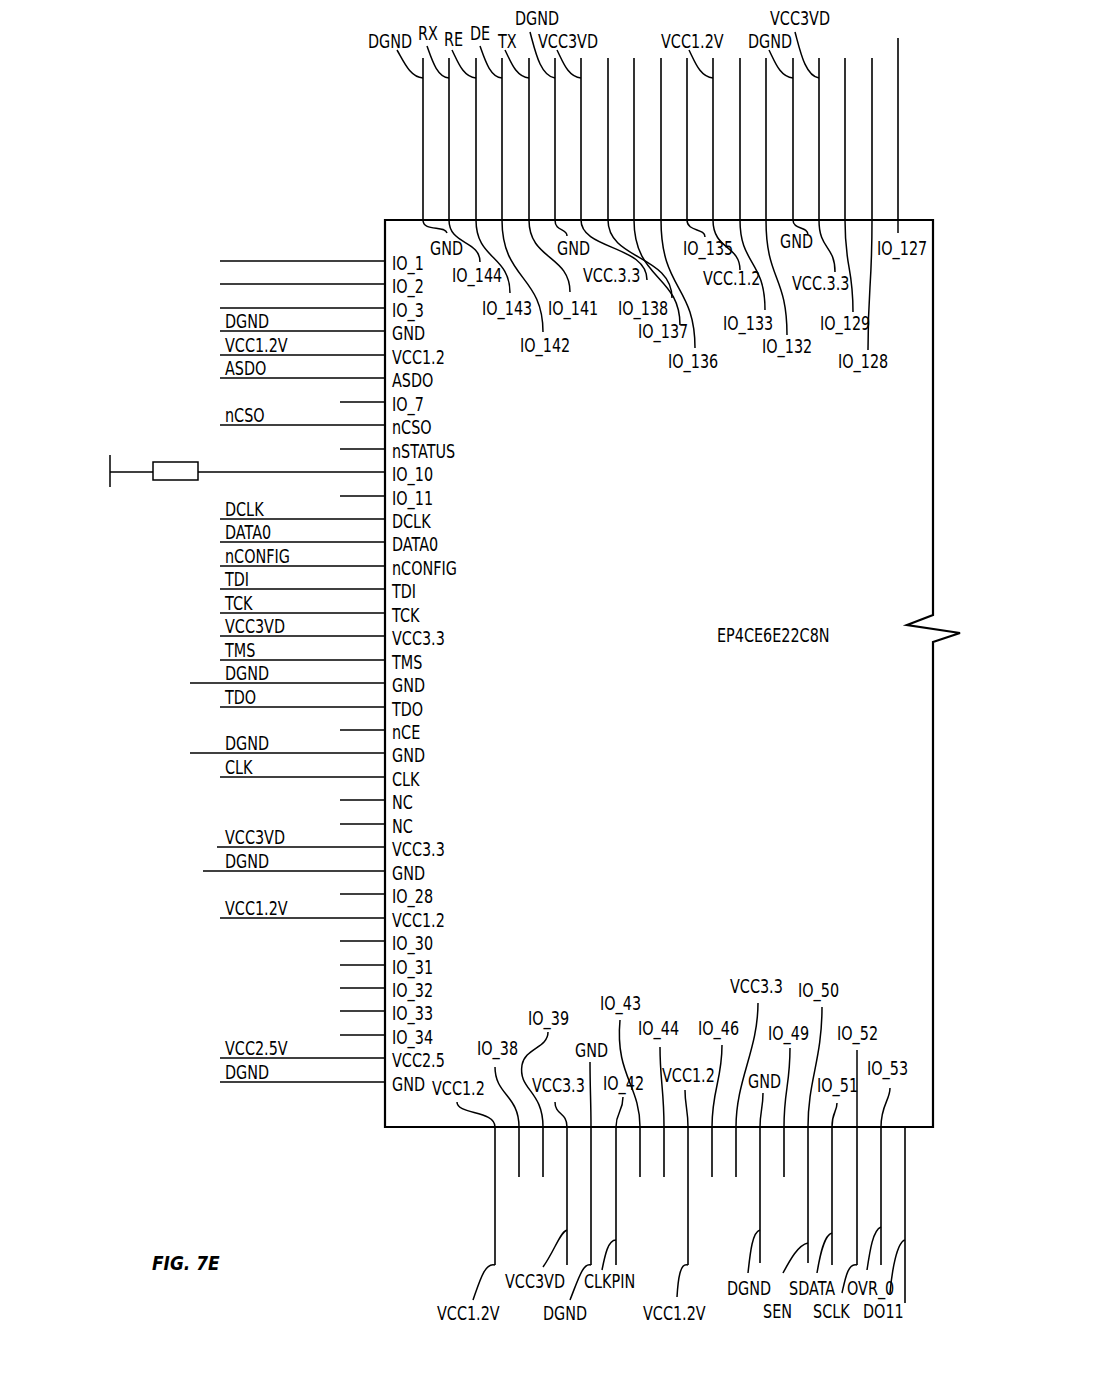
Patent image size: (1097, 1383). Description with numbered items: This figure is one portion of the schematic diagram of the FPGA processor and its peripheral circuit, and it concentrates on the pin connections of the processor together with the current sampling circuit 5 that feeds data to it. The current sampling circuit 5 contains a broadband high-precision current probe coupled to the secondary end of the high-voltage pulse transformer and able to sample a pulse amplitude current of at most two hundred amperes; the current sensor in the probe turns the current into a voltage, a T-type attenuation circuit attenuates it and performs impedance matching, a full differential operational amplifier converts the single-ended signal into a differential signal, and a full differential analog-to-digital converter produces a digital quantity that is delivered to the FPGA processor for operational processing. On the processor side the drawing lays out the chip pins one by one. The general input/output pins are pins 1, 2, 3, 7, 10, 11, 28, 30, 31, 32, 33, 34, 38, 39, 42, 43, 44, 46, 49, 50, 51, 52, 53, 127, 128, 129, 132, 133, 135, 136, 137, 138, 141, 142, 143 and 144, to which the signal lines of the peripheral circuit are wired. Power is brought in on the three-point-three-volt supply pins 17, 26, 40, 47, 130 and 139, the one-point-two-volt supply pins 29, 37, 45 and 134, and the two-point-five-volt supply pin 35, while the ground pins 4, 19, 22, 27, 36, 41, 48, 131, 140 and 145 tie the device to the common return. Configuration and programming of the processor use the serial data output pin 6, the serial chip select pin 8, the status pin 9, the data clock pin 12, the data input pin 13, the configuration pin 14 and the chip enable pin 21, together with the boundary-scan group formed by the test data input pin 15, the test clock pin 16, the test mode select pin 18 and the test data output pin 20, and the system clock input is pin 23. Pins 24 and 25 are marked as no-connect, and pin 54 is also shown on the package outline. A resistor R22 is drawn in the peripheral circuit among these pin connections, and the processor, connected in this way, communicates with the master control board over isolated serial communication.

The resistor R22 is at (120, 481).
The FPGA pin 1 (IO_1) 1 is at (302, 252).
The FPGA pin 2 (IO_2) 2 is at (302, 275).
The FPGA pin 3 (IO_3) 3 is at (302, 299).
The FPGA pin 4 (GND) 4 is at (302, 322).
The current sampling circuit 5 is at (302, 346).
The FPGA pin 6 (ASDO) 6 is at (302, 369).
The FPGA pin 7 (IO_7) 7 is at (362, 393).
The FPGA pin 8 (nCSO) 8 is at (302, 416).
The FPGA pin 9 (nSTATUS) 9 is at (362, 440).
The FPGA pin 10 (IO_10) 10 is at (291, 463).
The FPGA pin 11 (IO_11) 11 is at (362, 487).
The FPGA pin 12 (DCLK) 12 is at (302, 510).
The FPGA pin 13 (DATA0) 13 is at (302, 533).
The FPGA pin 14 (nCONFIG) 14 is at (302, 557).
The FPGA pin 15 (TDI) 15 is at (302, 580).
The FPGA pin 16 (TCK) 16 is at (302, 604).
The FPGA pin 17 (VCC3.3) 17 is at (302, 627).
The FPGA pin 18 (TMS) 18 is at (302, 651).
The FPGA pin 19 (GND) 19 is at (287, 674).
The FPGA pin 20 (TDO) 20 is at (302, 698).
The FPGA pin 21 (nCE) 21 is at (362, 721).
The FPGA pin 22 (GND) 22 is at (287, 744).
The FPGA pin 23 (CLK) 23 is at (302, 768).
The FPGA pin 24 (NC) 24 is at (362, 791).
The FPGA pin 25 (NC) 25 is at (362, 815).
The FPGA pin 26 (VCC3.3) 26 is at (301, 838).
The FPGA pin 27 (GND) 27 is at (294, 862).
The FPGA pin 28 (IO_28) 28 is at (362, 885).
The FPGA pin 29 (VCC1.2) 29 is at (302, 909).
The FPGA pin 30 (IO_30) 30 is at (362, 932).
The FPGA pin 31 (IO_31) 31 is at (362, 956).
The FPGA pin 32 (IO_32) 32 is at (362, 979).
The FPGA pin 33 (IO_33) 33 is at (362, 1002).
The FPGA pin 34 (IO_34) 34 is at (362, 1026).
The FPGA pin 35 (VCC2.5) 35 is at (302, 1049).
The FPGA pin 36 (GND) 36 is at (302, 1073).
The FPGA pin 37 (VCC1.2) 37 is at (476, 1201).
The FPGA pin 38 (IO_38) 38 is at (507, 1122).
The FPGA pin 39 (IO_39) 39 is at (535, 1104).
The FPGA pin 40 (VCC3.3) 40 is at (555, 1184).
The FPGA pin 41 (GND) 41 is at (580, 1181).
The FPGA pin 42 (IO_42) 42 is at (609, 1183).
The FPGA pin 43 (IO_43) 43 is at (629, 1098).
The FPGA pin 44 (IO_44) 44 is at (653, 1112).
The FPGA pin 45 (VCC1.2) 45 is at (677, 1193).
The FPGA pin 46 (IO_46) 46 is at (706, 1111).
The FPGA pin 47 (VCC3.3) 47 is at (736, 1090).
The FPGA pin 48 (GND) 48 is at (751, 1183).
The FPGA pin 49 (IO_49) 49 is at (776, 1112).
The FPGA pin 50 (IO_50) 50 is at (802, 1140).
The FPGA pin 51 (IO_51) 51 is at (824, 1188).
The FPGA pin 52 (IO_52) 52 is at (846, 1171).
The FPGA pin 53 (IO_53) 53 is at (875, 1179).
The FPGA pin 54 is at (894, 1215).
The FPGA pin 127 (IO_127) 127 is at (883, 135).
The FPGA pin 128 (IO_128) 128 is at (857, 204).
The FPGA pin 129 (IO_129) 129 is at (834, 185).
The FPGA pin 130 (VCC3.3) 130 is at (812, 152).
The FPGA pin 131 (GND) 131 is at (786, 142).
The FPGA pin 132 (IO_132) 132 is at (762, 196).
The FPGA pin 133 (IO_133) 133 is at (738, 184).
The FPGA pin 134 (VCC1.2) 134 is at (712, 160).
The FPGA pin 135 (IO_135) 135 is at (681, 147).
The FPGA pin 136 (IO_136) 136 is at (663, 203).
The FPGA pin 137 (IO_137) 137 is at (642, 191).
The FPGA pin 138 (IO_138) 138 is at (625, 178).
The FPGA pin 139 (VCC3.3) 139 is at (599, 165).
The FPGA pin 140 (GND) 140 is at (546, 134).
The FPGA pin 141 (IO_141) 141 is at (535, 171).
The FPGA pin 142 (IO_142) 142 is at (508, 189).
The FPGA pin 143 (IO_143) 143 is at (478, 171).
The FPGA pin 144 (IO_144) 144 is at (450, 154).
The FPGA pin 145 (GND) 145 is at (420, 141).